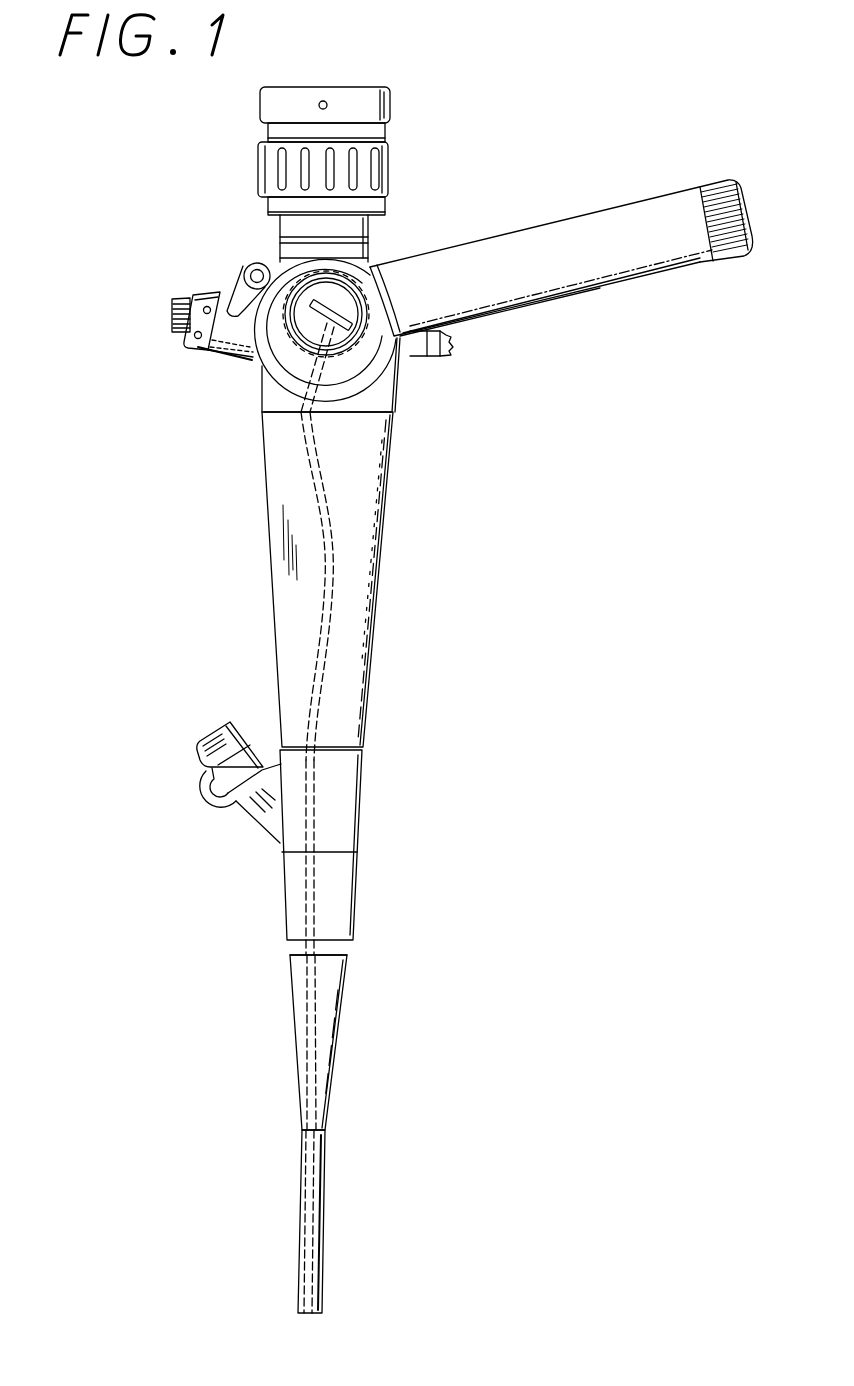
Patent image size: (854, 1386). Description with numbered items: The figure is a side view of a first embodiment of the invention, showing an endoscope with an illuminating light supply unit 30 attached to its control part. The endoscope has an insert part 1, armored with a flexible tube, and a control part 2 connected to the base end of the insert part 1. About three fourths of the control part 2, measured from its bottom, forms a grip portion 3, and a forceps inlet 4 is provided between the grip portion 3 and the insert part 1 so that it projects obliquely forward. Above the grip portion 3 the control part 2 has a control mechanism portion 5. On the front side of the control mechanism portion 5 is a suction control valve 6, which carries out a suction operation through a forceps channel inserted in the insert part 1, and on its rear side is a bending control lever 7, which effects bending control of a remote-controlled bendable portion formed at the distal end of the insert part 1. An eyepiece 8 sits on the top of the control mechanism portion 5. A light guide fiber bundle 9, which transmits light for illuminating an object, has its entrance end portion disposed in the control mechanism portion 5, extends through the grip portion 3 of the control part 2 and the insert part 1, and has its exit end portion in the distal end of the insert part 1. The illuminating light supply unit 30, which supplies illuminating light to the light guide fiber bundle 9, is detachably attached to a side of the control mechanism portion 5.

The insert part 1 is at (326, 1238).
The control part 2 is at (248, 495).
The grip portion 3 is at (388, 610).
The forceps inlet 4 is at (216, 732).
The control mechanism portion 5 is at (238, 376).
The suction control valve 6 is at (190, 302).
The bending control lever 7 is at (447, 359).
The eyepiece 8 is at (396, 152).
The light guide fiber bundle 9 is at (318, 987).
The illuminating light supply unit 30 is at (490, 232).